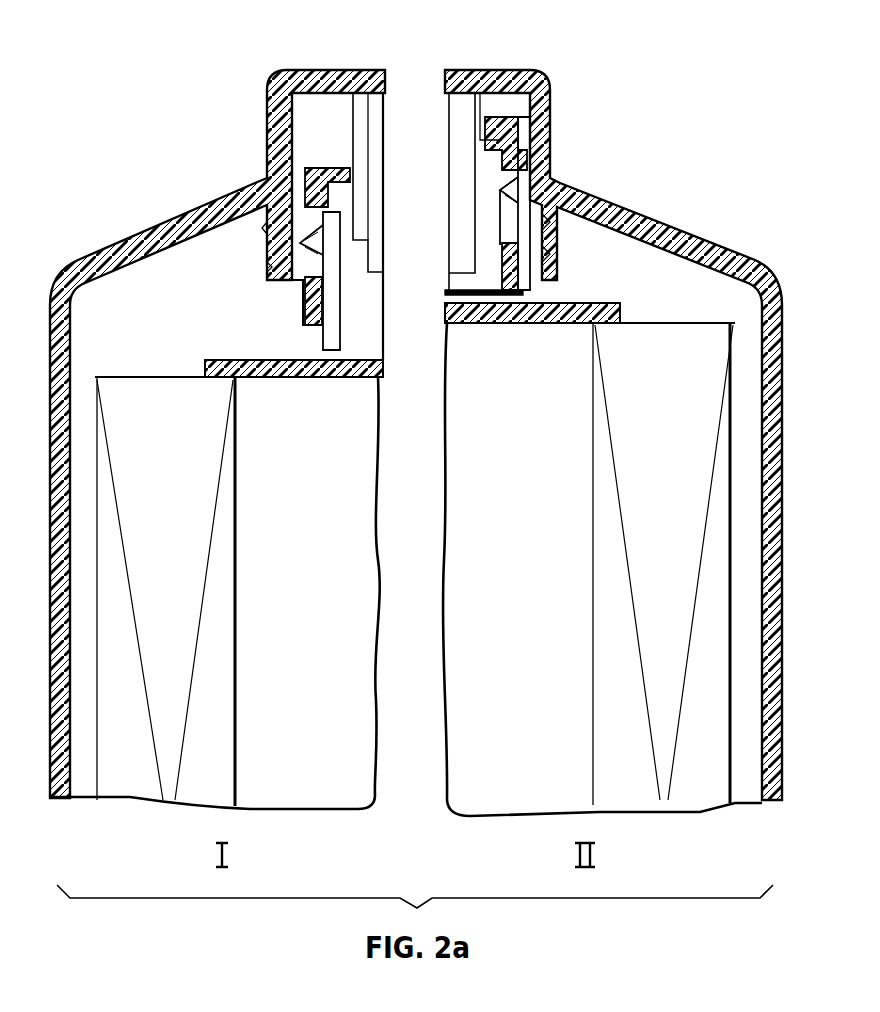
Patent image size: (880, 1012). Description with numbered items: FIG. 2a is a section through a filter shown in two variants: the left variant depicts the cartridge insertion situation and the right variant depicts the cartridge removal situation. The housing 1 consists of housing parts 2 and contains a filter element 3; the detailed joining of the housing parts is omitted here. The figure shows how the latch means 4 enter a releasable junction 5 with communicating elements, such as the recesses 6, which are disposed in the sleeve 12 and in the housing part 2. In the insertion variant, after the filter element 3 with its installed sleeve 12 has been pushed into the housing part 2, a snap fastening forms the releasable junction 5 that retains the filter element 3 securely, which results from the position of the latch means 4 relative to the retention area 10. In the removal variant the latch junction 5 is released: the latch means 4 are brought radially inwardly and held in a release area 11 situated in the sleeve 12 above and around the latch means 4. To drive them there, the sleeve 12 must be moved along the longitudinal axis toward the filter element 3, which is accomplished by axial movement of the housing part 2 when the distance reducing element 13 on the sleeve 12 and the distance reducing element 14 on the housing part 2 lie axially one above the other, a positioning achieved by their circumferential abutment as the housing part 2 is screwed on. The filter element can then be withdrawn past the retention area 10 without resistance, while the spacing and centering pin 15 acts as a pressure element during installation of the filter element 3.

The housing 1 is at (150, 80).
The housing part 2 is at (687, 240).
The filter element 3 is at (108, 556).
The latch means 4 is at (315, 248).
The releasable junction 5 is at (263, 267).
The recesses 6 is at (263, 227).
The retention area 10 is at (300, 287).
The release area 11 is at (337, 192).
The sleeve 12 is at (317, 297).
The distance reducing element 13 is at (555, 130).
The distance reducing element 14 is at (505, 100).
The spacing and centering pin 15 is at (355, 120).